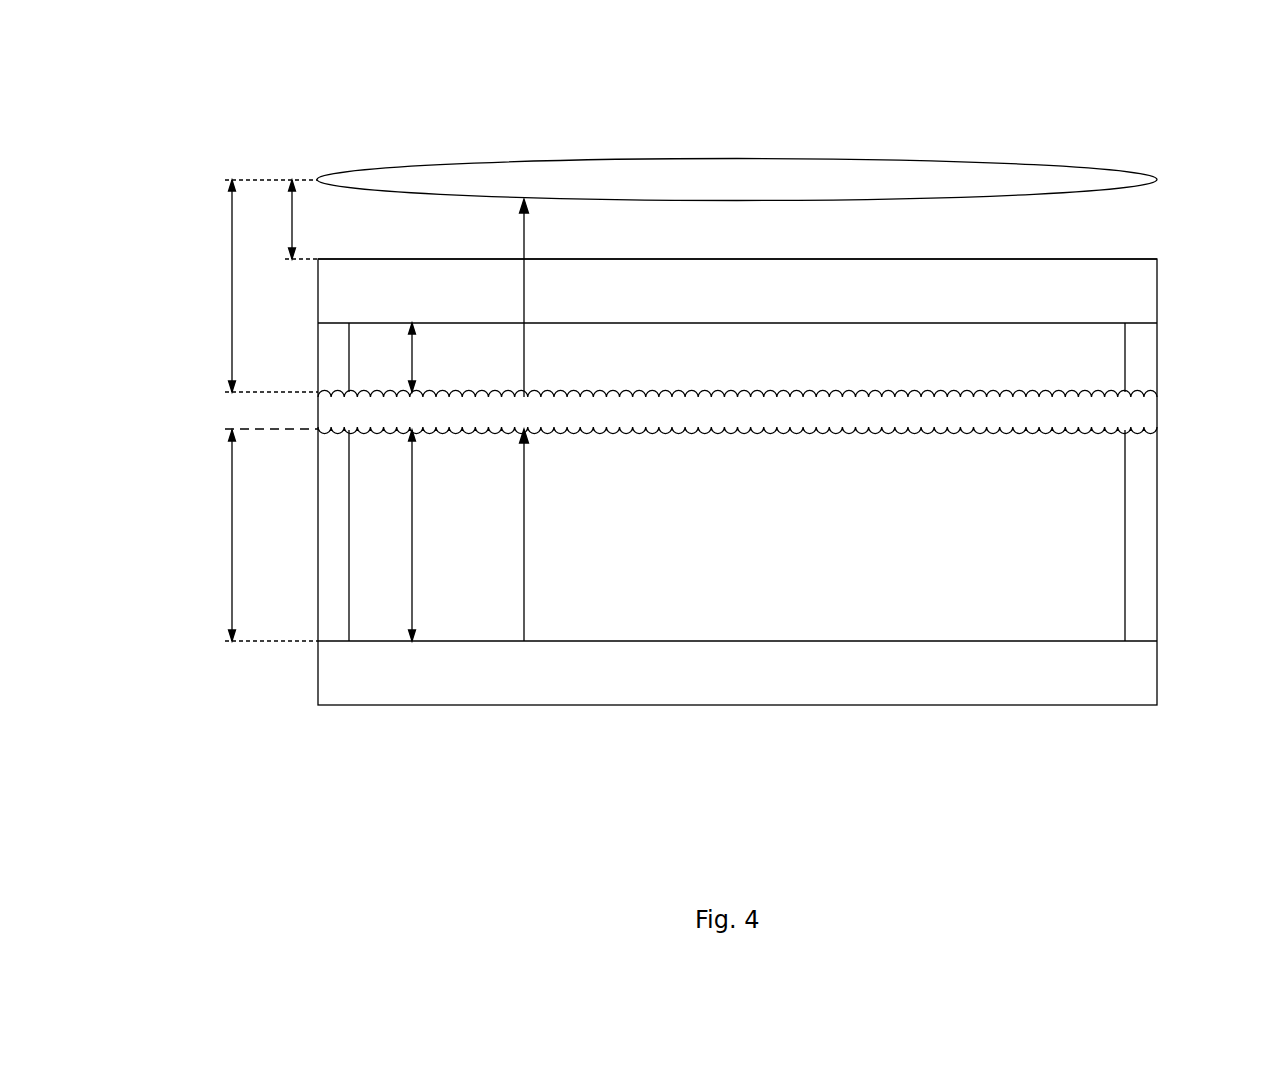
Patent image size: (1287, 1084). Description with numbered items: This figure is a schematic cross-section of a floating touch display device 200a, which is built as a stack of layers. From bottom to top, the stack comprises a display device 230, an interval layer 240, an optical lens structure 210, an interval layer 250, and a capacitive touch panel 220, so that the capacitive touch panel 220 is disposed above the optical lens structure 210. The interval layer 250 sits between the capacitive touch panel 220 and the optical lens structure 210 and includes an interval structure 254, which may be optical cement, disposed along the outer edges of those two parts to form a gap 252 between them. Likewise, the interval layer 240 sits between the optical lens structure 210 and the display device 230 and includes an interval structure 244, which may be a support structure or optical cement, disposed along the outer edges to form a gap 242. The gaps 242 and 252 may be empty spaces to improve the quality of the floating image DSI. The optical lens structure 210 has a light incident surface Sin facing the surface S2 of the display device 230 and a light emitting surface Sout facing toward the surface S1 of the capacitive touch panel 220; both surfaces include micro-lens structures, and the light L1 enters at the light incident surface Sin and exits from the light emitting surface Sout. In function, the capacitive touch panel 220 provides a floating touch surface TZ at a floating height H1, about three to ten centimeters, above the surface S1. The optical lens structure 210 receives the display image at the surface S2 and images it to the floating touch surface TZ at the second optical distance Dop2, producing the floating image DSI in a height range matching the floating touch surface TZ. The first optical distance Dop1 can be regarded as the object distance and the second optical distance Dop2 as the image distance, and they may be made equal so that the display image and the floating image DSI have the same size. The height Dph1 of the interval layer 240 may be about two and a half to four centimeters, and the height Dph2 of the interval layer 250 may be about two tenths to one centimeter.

The floating touch display device 200a is at (1277, 87).
The floating touch surface TZ is at (829, 163).
The floating image DSI is at (1108, 173).
The surface of the capacitive touch panel S1 is at (1100, 259).
The capacitive touch panel 220 is at (1147, 296).
The interval layer 250 is at (318, 341).
The interval structure 254 is at (328, 371).
The gap 252 is at (835, 372).
The optical lens structure 210 is at (1147, 410).
The light emitting surface Sout is at (1050, 392).
The light incident surface Sin is at (1050, 431).
The interval structure 244 is at (328, 538).
The gap 242 is at (835, 553).
The interval layer 240 is at (1158, 573).
The surface of the display device S2 is at (1097, 641).
The display device 230 is at (1147, 678).
The second optical distance Dop2 is at (196, 286).
The first optical distance Dop1 is at (196, 535).
The floating height H1 is at (275, 219).
The height of the interval layer Dph2 is at (450, 357).
The height of the interval layer Dph1 is at (450, 535).
The light L1 is at (540, 420).